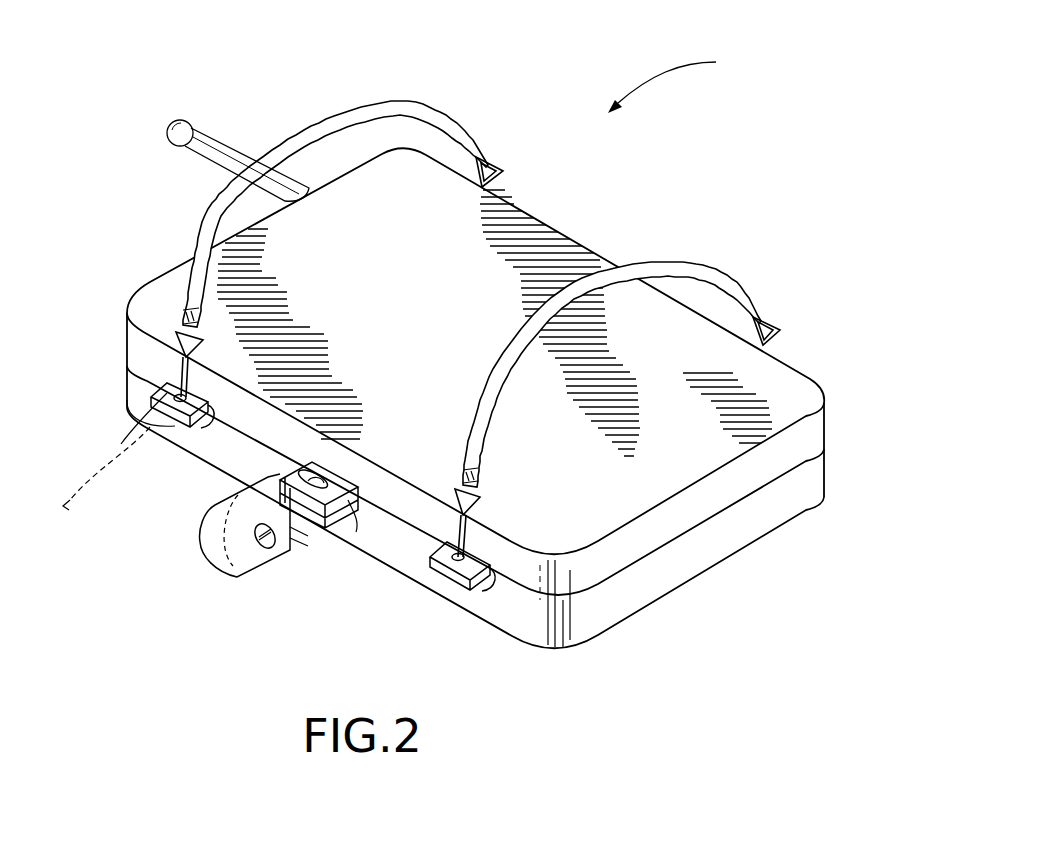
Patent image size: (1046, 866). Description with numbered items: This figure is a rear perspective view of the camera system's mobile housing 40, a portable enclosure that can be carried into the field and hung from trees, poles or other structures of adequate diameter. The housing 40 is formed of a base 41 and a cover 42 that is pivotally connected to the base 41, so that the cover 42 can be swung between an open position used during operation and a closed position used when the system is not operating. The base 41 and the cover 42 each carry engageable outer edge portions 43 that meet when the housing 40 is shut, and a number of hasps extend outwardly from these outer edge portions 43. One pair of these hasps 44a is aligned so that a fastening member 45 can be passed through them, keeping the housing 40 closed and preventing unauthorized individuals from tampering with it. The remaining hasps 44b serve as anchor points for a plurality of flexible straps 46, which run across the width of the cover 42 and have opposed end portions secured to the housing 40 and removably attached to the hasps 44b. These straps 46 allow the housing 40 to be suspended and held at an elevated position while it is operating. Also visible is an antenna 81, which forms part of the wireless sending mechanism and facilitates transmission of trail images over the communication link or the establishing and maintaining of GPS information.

The mobile housing 40 is at (688, 78).
The base 41 is at (558, 268).
The cover 42 is at (660, 570).
The outer edge portions 43 is at (247, 413).
The pair of hasps 44a is at (333, 518).
The other hasps 44b is at (150, 400).
The fastening member 45 is at (258, 572).
The flexible straps 46 is at (365, 103).
The antenna 81 is at (220, 135).